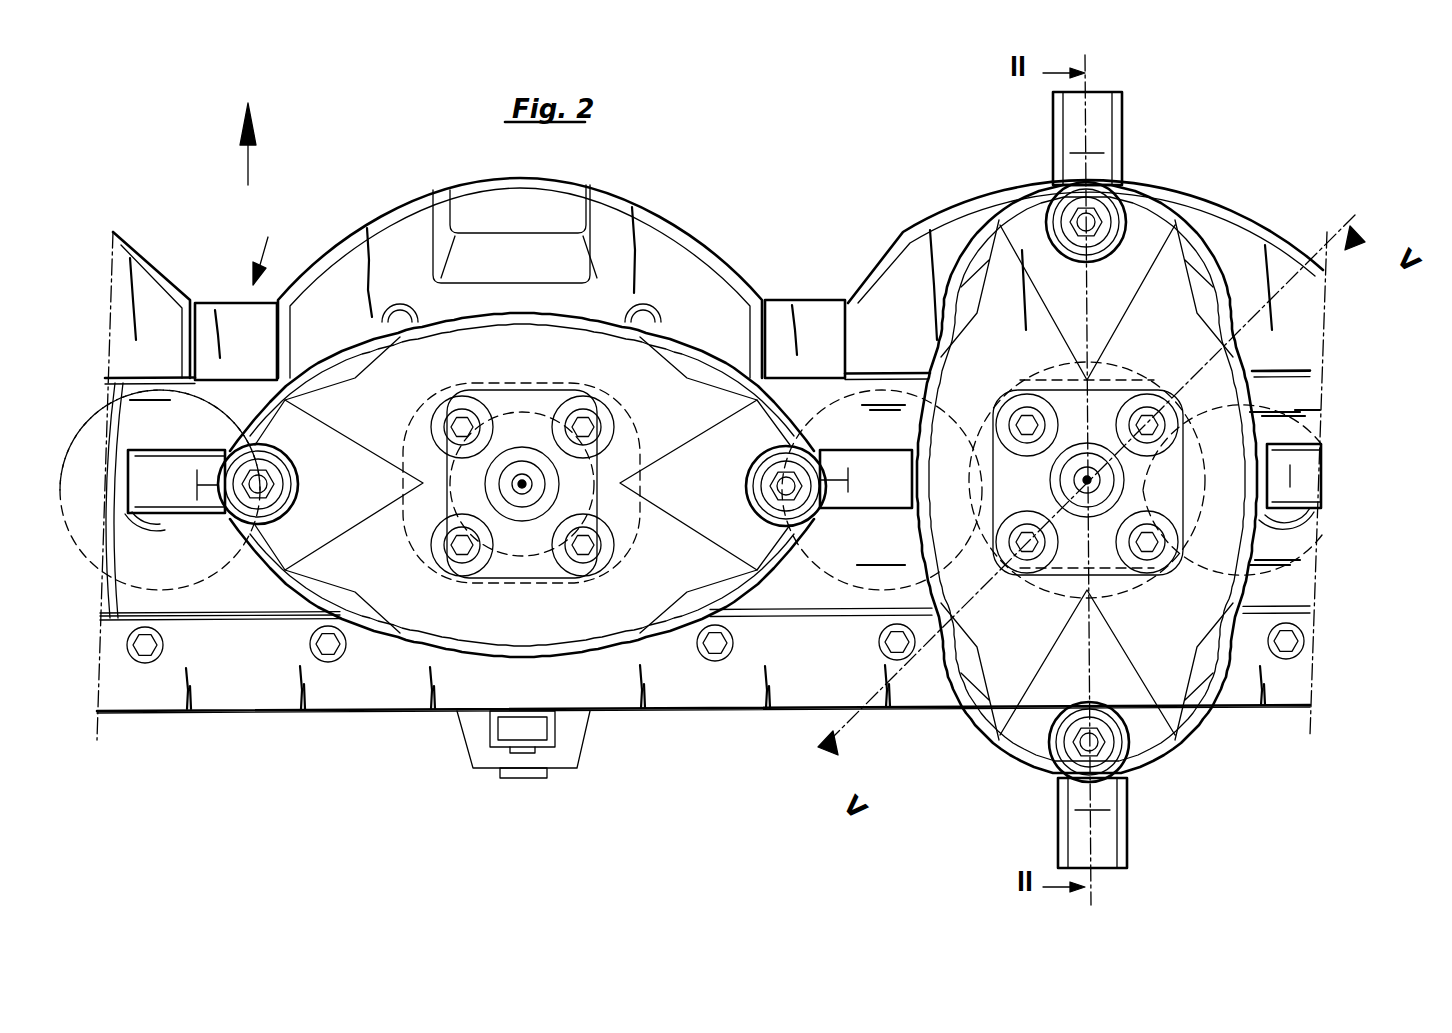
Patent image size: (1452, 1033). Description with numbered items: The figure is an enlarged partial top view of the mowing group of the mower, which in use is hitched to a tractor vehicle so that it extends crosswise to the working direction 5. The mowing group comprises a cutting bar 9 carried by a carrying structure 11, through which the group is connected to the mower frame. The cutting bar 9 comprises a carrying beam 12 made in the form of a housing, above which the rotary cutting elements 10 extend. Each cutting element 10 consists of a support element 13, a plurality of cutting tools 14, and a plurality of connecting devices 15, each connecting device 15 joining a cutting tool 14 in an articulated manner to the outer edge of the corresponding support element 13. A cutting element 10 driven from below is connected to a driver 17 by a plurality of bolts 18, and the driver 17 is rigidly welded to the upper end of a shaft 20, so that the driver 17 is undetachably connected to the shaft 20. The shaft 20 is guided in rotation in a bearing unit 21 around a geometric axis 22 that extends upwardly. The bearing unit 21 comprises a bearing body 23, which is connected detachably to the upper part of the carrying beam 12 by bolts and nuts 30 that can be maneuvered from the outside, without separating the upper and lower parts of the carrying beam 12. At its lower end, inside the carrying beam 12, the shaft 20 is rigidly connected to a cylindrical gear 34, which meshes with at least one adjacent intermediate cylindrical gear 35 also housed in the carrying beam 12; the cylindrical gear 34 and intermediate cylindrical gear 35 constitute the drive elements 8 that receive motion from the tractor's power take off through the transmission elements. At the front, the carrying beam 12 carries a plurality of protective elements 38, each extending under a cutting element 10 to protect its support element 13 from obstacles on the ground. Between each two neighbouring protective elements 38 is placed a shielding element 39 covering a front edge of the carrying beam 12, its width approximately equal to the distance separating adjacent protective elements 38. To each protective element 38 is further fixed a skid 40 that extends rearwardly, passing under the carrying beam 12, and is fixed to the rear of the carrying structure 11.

The working direction 5 is at (248, 167).
The drive elements 8 is at (190, 600).
The cutting bar 9 is at (263, 247).
The rotary cutting element 10 is at (335, 360).
The carrying structure 11 is at (716, 725).
The carrying beam 12 is at (267, 603).
The support element 13 is at (688, 356).
The cutting tool 14 is at (187, 514).
The connecting device 15 is at (282, 500).
The driver 17 is at (490, 585).
The bolts 18 is at (444, 430).
The shaft 20 is at (425, 487).
The bearing unit 21 is at (580, 615).
The geometric axis 22 is at (560, 487).
The bearing body 23 is at (530, 598).
The nuts 30 is at (450, 400).
The cylindrical gear 34 is at (525, 405).
The intermediate cylindrical gear 35 is at (240, 428).
The protective element 38 is at (140, 250).
The shielding element 39 is at (232, 305).
The skid 40 is at (478, 750).